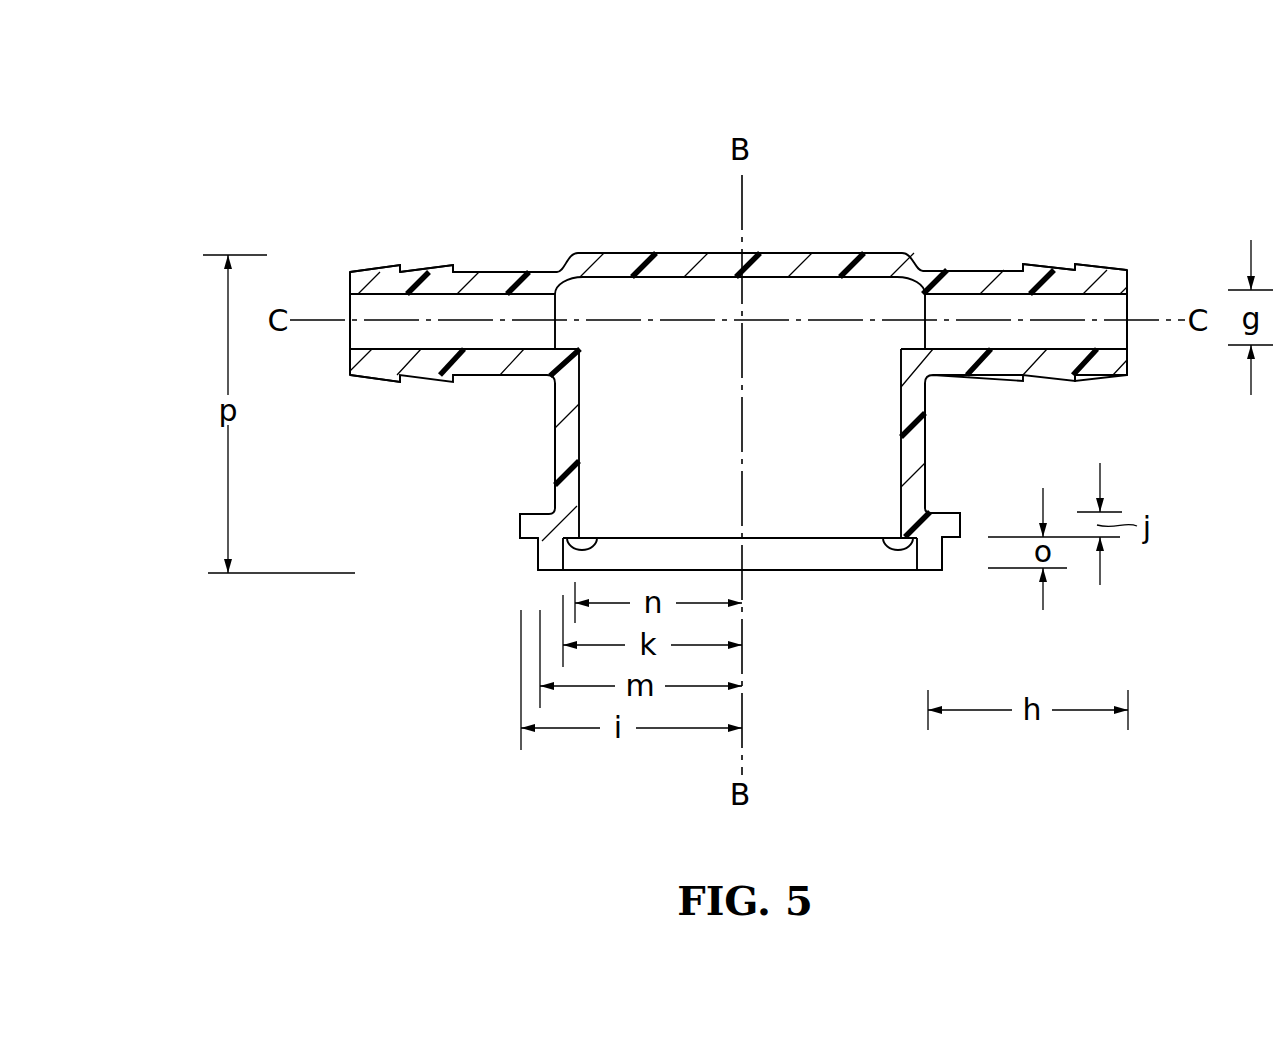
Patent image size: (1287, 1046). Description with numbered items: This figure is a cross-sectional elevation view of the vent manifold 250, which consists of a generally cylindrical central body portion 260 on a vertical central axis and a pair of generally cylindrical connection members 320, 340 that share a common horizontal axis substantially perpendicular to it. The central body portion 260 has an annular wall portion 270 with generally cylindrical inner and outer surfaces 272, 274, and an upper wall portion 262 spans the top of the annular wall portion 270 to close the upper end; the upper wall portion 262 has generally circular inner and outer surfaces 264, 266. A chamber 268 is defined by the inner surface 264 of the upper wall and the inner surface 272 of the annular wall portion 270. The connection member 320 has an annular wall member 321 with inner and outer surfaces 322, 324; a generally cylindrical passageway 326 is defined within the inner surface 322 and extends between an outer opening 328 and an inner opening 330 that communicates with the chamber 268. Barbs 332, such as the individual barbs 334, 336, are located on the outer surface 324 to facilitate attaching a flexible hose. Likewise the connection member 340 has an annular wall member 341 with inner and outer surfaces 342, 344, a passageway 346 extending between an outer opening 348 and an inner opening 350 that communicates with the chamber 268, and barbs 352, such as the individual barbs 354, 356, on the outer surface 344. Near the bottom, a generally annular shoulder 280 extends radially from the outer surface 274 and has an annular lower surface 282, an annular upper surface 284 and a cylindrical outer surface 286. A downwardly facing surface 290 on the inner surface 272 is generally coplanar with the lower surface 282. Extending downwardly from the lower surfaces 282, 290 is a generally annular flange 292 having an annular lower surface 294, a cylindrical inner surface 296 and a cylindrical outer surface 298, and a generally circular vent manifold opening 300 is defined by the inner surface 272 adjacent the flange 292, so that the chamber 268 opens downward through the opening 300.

The vent manifold 250 is at (322, 122).
The central body portion 260 is at (832, 248).
The upper wall portion 262 is at (678, 253).
The inner surface of upper wall portion 264 is at (703, 278).
The outer surface of upper wall portion 266 is at (624, 253).
The chamber 268 is at (800, 436).
The annular wall portion 270 is at (567, 483).
The inner surface of annular wall portion 272 is at (583, 426).
The outer surface of annular wall portion 274 is at (553, 447).
The shoulder 280 is at (518, 524).
The lower surface of shoulder 282 is at (524, 548).
The upper surface of shoulder 284 is at (926, 482).
The outer surface of shoulder 286 is at (960, 516).
The downwardly facing surface 290 is at (596, 540).
The flange 292 is at (940, 583).
The lower surface of flange 294 is at (550, 571).
The inner surface of flange 296 is at (885, 540).
The outer surface of flange 298 is at (950, 562).
The vent manifold opening 300 is at (810, 585).
The connection member 320 is at (480, 248).
The annular wall member 321 is at (490, 366).
The inner surface of annular wall member 322 is at (497, 296).
The outer surface of annular wall member 324 is at (520, 270).
The passageway 326 is at (380, 310).
The outer opening 328 is at (350, 340).
The inner opening 330 is at (561, 302).
The barbs 332 is at (386, 402).
The barb 334 is at (437, 265).
The barb 336 is at (374, 268).
The connection member 340 is at (996, 244).
The annular wall member 341 is at (990, 366).
The inner surface of annular wall member 342 is at (980, 296).
The outer surface of annular wall member 344 is at (938, 266).
The passageway 346 is at (1130, 300).
The outer opening 348 is at (1130, 337).
The inner opening 350 is at (917, 302).
The barbs 352 is at (1090, 391).
The barb 354 is at (1038, 263).
The barb 356 is at (1097, 263).